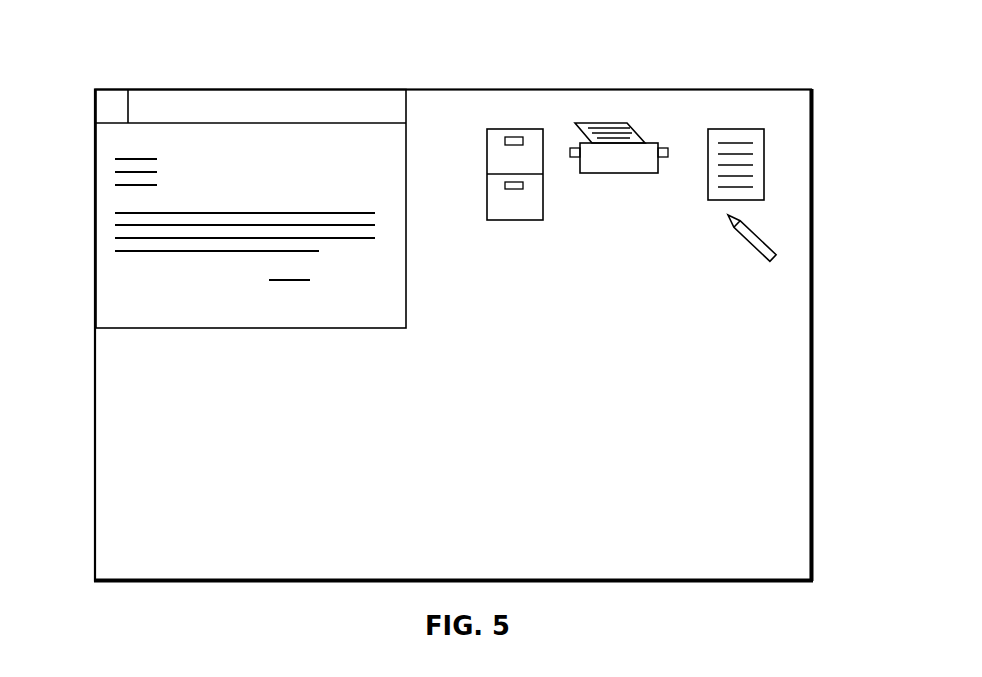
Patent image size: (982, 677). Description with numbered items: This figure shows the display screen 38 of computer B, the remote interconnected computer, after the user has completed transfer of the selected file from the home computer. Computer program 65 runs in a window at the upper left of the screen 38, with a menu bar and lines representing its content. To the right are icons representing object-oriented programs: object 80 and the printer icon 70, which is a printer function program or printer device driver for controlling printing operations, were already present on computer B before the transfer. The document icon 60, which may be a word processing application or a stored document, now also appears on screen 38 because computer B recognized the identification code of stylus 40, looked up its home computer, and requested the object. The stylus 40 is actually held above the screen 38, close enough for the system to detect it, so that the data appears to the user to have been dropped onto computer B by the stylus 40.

The display screen 38 is at (813, 303).
The computer program 65 is at (108, 143).
The object 80 is at (510, 128).
The printer function program icon 70 is at (617, 118).
The document icon 60 is at (740, 127).
The stylus 40 is at (739, 250).